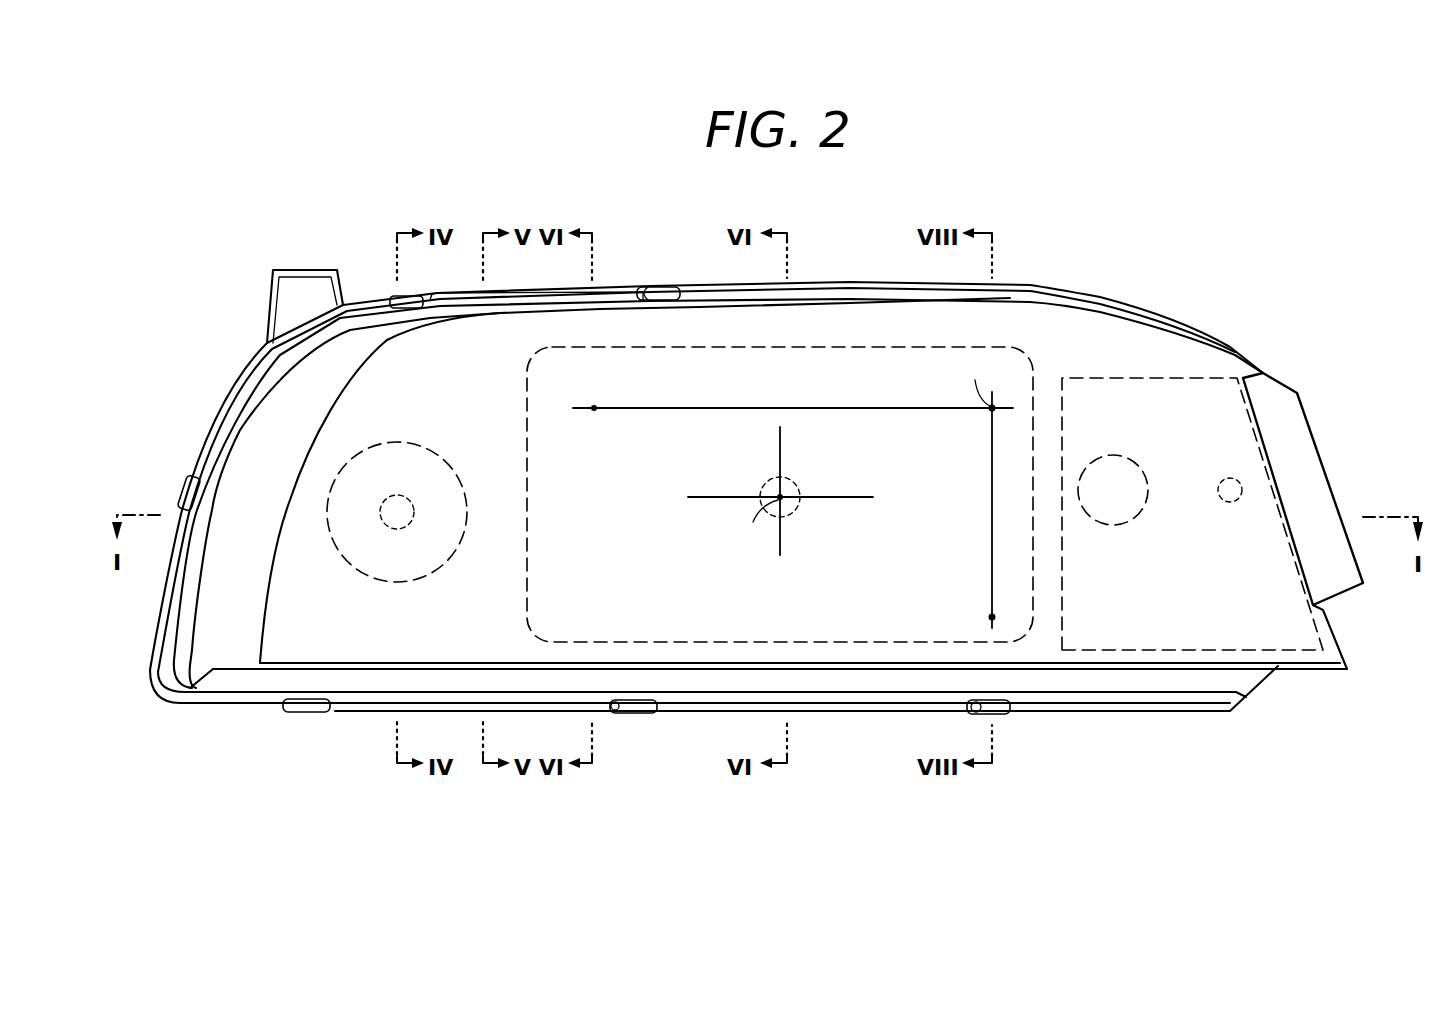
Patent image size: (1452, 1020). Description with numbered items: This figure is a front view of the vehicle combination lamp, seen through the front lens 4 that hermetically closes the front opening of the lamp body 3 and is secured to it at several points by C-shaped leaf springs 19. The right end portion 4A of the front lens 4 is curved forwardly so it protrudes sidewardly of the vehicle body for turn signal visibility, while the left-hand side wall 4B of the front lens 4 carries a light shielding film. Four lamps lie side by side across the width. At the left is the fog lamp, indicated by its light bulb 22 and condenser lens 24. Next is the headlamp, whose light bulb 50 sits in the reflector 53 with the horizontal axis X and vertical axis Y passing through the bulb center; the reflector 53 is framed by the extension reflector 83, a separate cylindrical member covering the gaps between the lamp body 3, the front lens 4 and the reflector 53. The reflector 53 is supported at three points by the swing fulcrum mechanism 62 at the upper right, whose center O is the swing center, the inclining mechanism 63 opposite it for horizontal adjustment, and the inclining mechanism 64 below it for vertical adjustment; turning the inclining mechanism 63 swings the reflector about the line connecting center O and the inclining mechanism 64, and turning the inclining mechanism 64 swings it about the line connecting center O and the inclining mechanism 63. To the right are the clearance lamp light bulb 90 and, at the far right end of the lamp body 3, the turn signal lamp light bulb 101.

The lamp body 3 is at (156, 704).
The front lens 4 is at (1230, 347).
The right end portion of the front lens 4A is at (1347, 584).
The left-hand side wall of the front lens 4B is at (193, 647).
The C-shaped leaf springs 19 is at (392, 296).
The light bulb 22 is at (412, 516).
The condenser lens 24 is at (423, 447).
The light bulb 50 is at (798, 485).
The reflector 53 is at (833, 348).
The swing fulcrum mechanism 62 is at (1022, 373).
The inclining mechanism 63 is at (594, 414).
The inclining mechanism 64 is at (1012, 609).
The extension reflector 83 is at (780, 442).
The light bulb 90 is at (1126, 454).
The light bulb 101 is at (1222, 477).